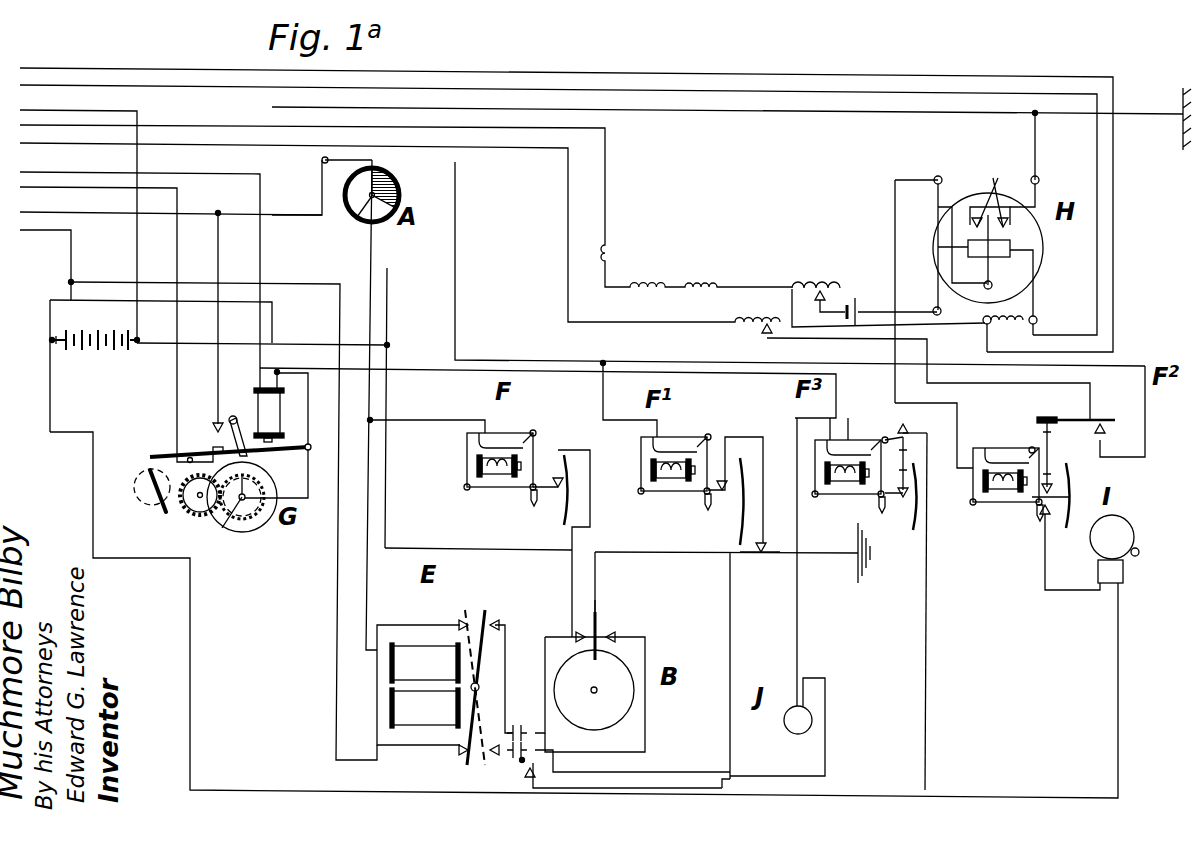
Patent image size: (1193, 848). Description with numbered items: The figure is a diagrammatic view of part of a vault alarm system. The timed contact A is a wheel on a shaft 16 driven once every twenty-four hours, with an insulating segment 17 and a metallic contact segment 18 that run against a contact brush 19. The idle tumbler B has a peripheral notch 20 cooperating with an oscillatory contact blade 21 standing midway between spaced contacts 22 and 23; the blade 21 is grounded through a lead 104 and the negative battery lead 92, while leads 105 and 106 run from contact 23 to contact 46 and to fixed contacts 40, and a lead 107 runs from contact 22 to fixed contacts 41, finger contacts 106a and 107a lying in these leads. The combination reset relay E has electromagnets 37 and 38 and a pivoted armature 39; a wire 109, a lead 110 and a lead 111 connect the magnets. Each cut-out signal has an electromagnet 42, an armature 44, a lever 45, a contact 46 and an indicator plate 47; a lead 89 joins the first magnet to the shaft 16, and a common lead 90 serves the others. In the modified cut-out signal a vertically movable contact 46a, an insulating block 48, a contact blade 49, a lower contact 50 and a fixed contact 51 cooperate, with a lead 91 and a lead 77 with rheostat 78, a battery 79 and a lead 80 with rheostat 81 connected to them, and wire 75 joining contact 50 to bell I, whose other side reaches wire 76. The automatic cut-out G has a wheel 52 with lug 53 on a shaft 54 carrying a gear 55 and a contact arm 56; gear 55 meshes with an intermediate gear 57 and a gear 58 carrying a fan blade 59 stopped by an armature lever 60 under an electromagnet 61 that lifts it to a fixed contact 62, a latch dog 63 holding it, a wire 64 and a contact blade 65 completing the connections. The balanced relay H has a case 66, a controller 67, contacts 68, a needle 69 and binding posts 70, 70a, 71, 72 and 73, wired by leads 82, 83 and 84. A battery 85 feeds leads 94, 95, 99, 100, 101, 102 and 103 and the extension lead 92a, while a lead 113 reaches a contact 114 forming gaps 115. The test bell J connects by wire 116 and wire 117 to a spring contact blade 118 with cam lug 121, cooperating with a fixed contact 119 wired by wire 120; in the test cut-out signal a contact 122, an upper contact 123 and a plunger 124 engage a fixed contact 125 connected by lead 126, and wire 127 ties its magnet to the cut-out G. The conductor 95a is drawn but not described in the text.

The shaft 16 is at (352, 210).
The insulating segment 17 is at (362, 220).
The metallic contact segment 18 is at (392, 186).
The contact brush 19 is at (345, 175).
The peripheral notch 20 is at (594, 690).
The oscillatory contact blade 21 is at (603, 627).
The fixed contact 22 is at (615, 635).
The fixed contact 23 is at (600, 612).
The electromagnet 37 is at (425, 708).
The electromagnet 38 is at (425, 663).
The pivoted armature 39 is at (485, 606).
The fixed contacts 40 is at (497, 625).
The fixed contacts 41 is at (465, 615).
The electromagnet 42 is at (478, 466).
The armature 44 is at (540, 435).
The lever 45 is at (512, 490).
The electrical contact 46 is at (557, 492).
The vertically movable contact 46a is at (1052, 460).
The indicator plate 47 is at (565, 525).
The insulating block 48 is at (1045, 417).
The contact blade 49 is at (1072, 418).
The lower contact 50 is at (1040, 520).
The fixed contact 51 is at (1108, 430).
The disc or wheel 52 is at (265, 525).
The lug 53 is at (255, 455).
The shaft 54 is at (242, 500).
The gear 55 is at (245, 520).
The radiating contact arm 56 is at (225, 528).
The intermediate gear 57 is at (190, 515).
The gear 58 is at (140, 510).
The fan blade 59 is at (150, 482).
The armature lever 60 is at (288, 447).
The electromagnet 61 is at (280, 432).
The fixed electrical contact 62 is at (214, 432).
The latch dog 63 is at (240, 420).
The wire 64 is at (308, 498).
The contact blade 65 is at (205, 500).
The enclosing case 66 is at (1044, 257).
The electromagnetic controller 67 is at (978, 252).
The fixed spaced contacts 68 is at (990, 190).
The contact needle 69 is at (996, 270).
The binding post 70 is at (1037, 318).
The binding post 70a is at (934, 308).
The binding post 71 is at (942, 176).
The binding post 72 is at (1040, 180).
The binding post 73 is at (984, 322).
The wire 75 is at (1098, 590).
The wire 76 is at (93, 432).
The lead 77 is at (1116, 388).
The rheostat 78 is at (758, 330).
The battery 79 is at (858, 305).
The lead 80 is at (792, 298).
The rheostat 81 is at (822, 287).
The lead 82 is at (163, 143).
The lead 83 is at (60, 68).
The lead 84 is at (92, 85).
The battery 85 is at (100, 350).
The lead 89 is at (372, 268).
The common lead 90 is at (458, 270).
The lead 91 is at (895, 392).
The negative battery lead 92 is at (145, 340).
The extension lead 92a is at (572, 75).
The lead 94 is at (71, 250).
The lead 95 is at (128, 212).
The conductor 95a is at (296, 215).
The lead 99 is at (40, 110).
The lead 100 is at (105, 188).
The lead 101 is at (50, 172).
The lead 102 is at (110, 300).
The lead 103 is at (305, 400).
The lead 104 is at (598, 596).
The lead 105 is at (575, 450).
The lead 106 is at (520, 700).
The finger contact 106a is at (528, 722).
The lead 107 is at (608, 752).
The finger contact 107a is at (535, 752).
The wire 109 is at (415, 615).
The lead 110 is at (137, 282).
The lead 111 is at (366, 590).
The lead 113 is at (763, 498).
The contact 114 is at (763, 540).
The gaps 115 is at (760, 556).
The wire 116 is at (797, 626).
The wire 117 is at (825, 758).
The spring contact blade 118 is at (560, 764).
The fixed contact 119 is at (527, 772).
The wire 120 is at (730, 740).
The cam lug 121 is at (522, 763).
The contact 122 is at (875, 545).
The upper contact 123 is at (910, 430).
The plunger 124 is at (912, 455).
The fixed contact 125 is at (850, 425).
The lead 126 is at (927, 690).
The wire 127 is at (588, 374).